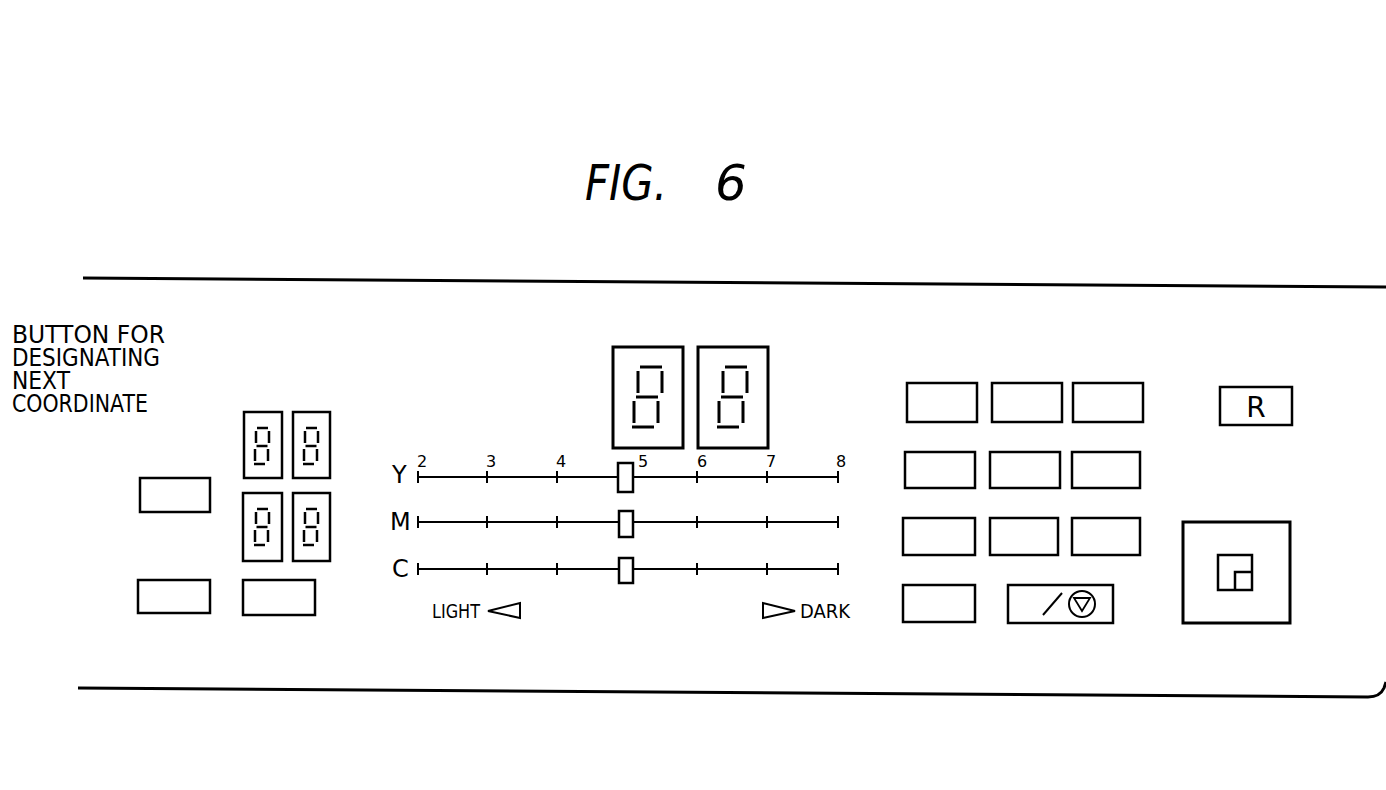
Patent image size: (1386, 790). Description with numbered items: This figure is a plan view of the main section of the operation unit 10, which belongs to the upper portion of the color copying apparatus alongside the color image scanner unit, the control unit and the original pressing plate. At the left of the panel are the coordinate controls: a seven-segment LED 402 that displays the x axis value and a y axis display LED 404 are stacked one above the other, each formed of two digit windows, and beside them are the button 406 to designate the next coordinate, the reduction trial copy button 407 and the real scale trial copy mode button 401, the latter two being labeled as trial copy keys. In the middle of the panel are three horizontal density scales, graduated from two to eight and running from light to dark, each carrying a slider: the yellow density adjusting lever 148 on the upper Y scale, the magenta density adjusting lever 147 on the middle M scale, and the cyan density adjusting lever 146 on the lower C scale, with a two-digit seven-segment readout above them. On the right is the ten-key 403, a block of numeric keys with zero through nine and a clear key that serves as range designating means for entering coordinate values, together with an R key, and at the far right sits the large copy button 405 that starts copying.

The operation unit 10 is at (828, 695).
The cyan density adjusting lever 146 is at (627, 583).
The magenta density adjusting lever 147 is at (633, 533).
The yellow density adjusting lever 148 is at (619, 467).
The real scale trial copy mode button 401 is at (310, 597).
The 7-segment LED to display an x axis 402 is at (330, 406).
The ten-key 403 is at (1143, 372).
The y axis display LED 404 is at (245, 566).
The copy button 405 is at (1243, 623).
The button to designate the next coordinate 406 is at (140, 496).
The reduction trial copy button 407 is at (138, 598).